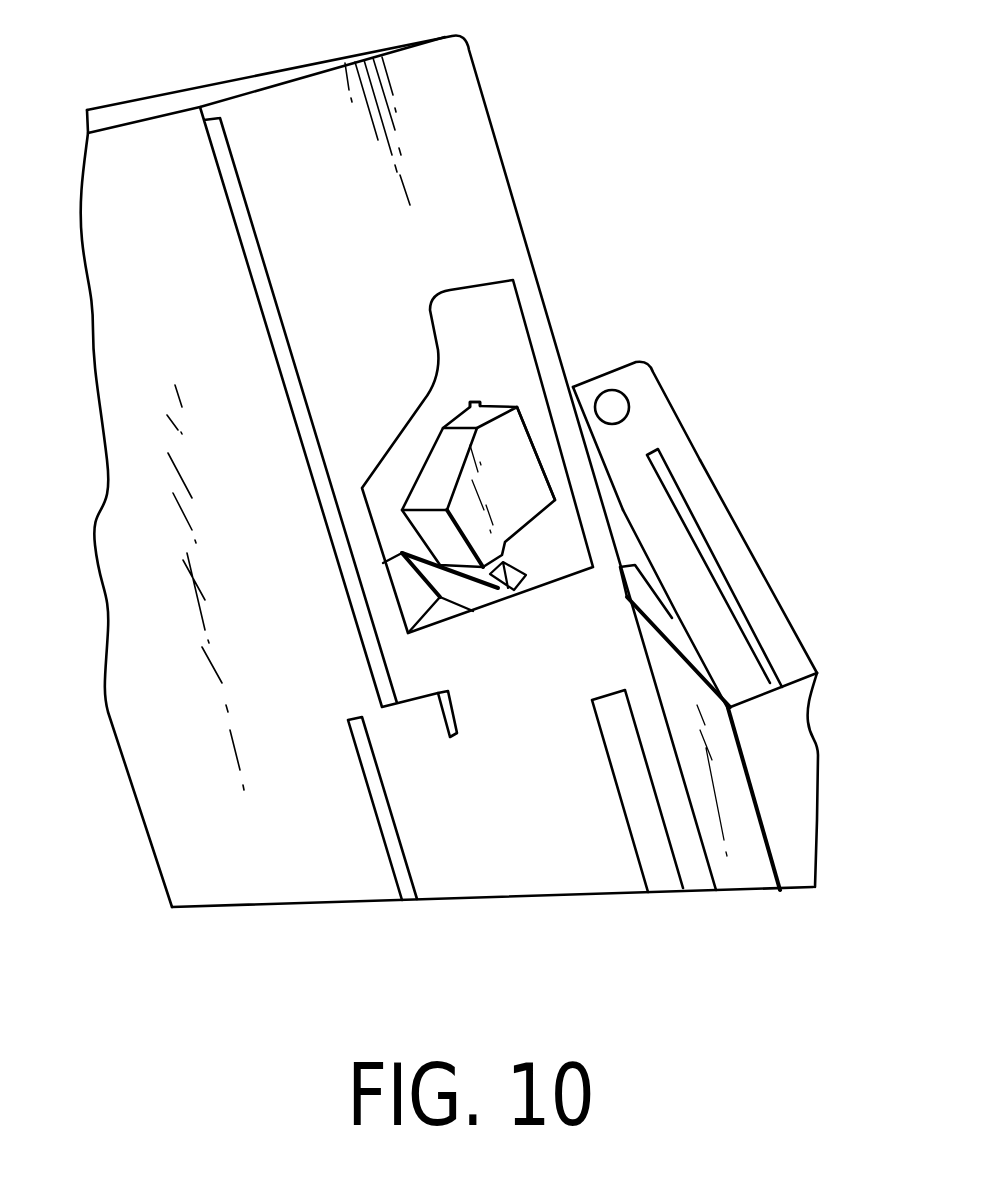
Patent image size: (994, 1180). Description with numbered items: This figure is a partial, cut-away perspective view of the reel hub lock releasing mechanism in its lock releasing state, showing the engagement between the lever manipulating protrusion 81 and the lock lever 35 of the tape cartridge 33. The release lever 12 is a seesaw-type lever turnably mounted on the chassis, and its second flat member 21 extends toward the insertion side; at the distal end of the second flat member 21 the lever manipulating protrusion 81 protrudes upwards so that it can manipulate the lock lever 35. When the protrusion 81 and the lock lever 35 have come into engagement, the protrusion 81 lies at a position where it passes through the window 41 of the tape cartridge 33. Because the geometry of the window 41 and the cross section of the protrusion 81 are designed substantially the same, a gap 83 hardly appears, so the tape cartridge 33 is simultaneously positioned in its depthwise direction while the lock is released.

The tape cartridge 33 is at (453, 133).
The gap 83 is at (485, 403).
The lever manipulating protrusion 81 is at (498, 452).
The window 41 is at (556, 446).
The release lever 12 is at (650, 423).
The second flat member 21 is at (753, 580).
The lock lever 35 is at (453, 610).